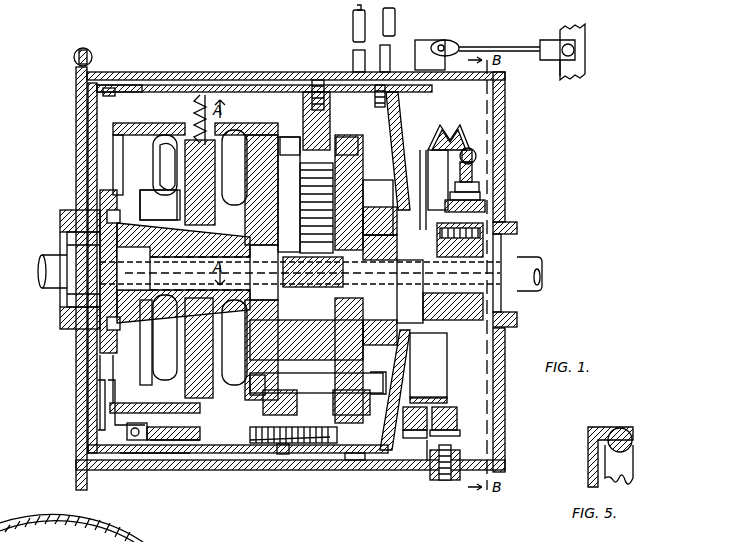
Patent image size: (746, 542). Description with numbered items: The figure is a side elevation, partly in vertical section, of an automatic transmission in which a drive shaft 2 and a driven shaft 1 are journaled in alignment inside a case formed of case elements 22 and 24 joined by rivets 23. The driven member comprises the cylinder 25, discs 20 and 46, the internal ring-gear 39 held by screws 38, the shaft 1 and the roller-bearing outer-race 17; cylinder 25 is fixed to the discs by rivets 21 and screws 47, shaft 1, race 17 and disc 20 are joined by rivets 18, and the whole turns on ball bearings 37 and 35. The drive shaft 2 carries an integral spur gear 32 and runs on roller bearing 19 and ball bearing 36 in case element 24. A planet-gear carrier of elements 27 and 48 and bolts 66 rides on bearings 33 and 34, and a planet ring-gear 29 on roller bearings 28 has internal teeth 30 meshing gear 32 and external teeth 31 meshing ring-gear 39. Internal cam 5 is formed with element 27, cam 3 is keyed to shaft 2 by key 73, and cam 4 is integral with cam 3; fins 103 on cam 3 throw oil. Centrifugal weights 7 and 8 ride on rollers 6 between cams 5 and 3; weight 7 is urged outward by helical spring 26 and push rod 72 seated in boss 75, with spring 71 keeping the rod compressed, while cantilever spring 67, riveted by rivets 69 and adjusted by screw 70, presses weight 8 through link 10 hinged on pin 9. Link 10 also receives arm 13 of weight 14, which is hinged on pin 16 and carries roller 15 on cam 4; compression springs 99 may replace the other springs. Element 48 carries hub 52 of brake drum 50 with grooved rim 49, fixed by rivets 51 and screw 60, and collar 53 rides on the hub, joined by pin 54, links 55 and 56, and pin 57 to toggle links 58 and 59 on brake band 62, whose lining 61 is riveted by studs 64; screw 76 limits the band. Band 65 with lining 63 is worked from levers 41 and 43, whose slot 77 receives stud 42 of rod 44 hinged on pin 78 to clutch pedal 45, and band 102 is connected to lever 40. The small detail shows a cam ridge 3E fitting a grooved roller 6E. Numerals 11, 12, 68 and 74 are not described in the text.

In FIG. 1, the driven shaft 1 is at (45, 285).
In FIG. 1, the drive shaft 2 is at (541, 280).
In FIG. 1, the internal cam 3 is at (178, 138).
In FIG. 1, the third internal elliptical cam 4 is at (130, 124).
In FIG. 1, the internal cam 5 is at (255, 122).
In FIG. 1, the rollers 6 is at (158, 162).
In FIG. 1, the centrifugally operating weight 7 is at (160, 152).
In FIG. 1, the centrifugally operating weight 8 is at (178, 342).
In FIG. 1, the pin 9 is at (205, 398).
In FIG. 1, the connecting link 10 is at (185, 440).
In FIG. 1, the bracket arm 11 is at (160, 446).
In FIG. 1, the bracket base 12 is at (158, 454).
In FIG. 1, the arm 13 is at (127, 440).
In FIG. 1, the third centrifugally operating weight 14 is at (105, 395).
In FIG. 1, the roller 15 is at (115, 410).
In FIG. 1, the pin 16 is at (100, 378).
In FIG. 1, the roller-bearing outer-race 17 is at (97, 296).
In FIG. 1, the rivets 18 is at (100, 330).
In FIG. 1, the roller-bearing assembly 19 is at (96, 268).
In FIG. 1, the disc 20 is at (76, 169).
In FIG. 1, the rivets 21 is at (92, 105).
In FIG. 1, the case element 22 is at (78, 82).
In FIG. 1, the rivets 23 is at (74, 57).
In FIG. 1, the case element 24 is at (110, 85).
In FIG. 1, the cylinder 25 is at (160, 86).
In FIG. 1, the helical spring 26 is at (195, 90).
In FIG. 1, the planet-gear carrier element 27 is at (284, 85).
In FIG. 1, the roller bearing assemblies 28 is at (290, 136).
In FIG. 1, the planet ring-gear 29 is at (348, 190).
In FIG. 1, the internal teeth 30 is at (299, 182).
In FIG. 1, the external teeth 31 is at (362, 340).
In FIG. 1, the spur gear 32 is at (295, 256).
In FIG. 1, the bearing assembly 33 is at (299, 210).
In FIG. 1, the bearing assembly 34 is at (405, 312).
In FIG. 1, the ball bearing assembly 35 is at (397, 272).
In FIG. 1, the ball-bearing assembly 36 is at (518, 298).
In FIG. 1, the ball bearing assembly 37 is at (66, 240).
In FIG. 1, the screws 38 is at (354, 60).
In FIG. 1, the internal ring-gear 39 is at (318, 80).
In FIG. 1, the lever 40 is at (352, 18).
In FIG. 1, the lever 41 is at (396, 22).
In FIG. 1, the stud 42 is at (448, 40).
In FIG. 1, the lever 43 is at (392, 58).
In FIG. 1, the connecting rod 44 is at (520, 46).
In FIG. 1, the motor clutch pedal 45 is at (555, 70).
In FIG. 1, the disc 46 is at (387, 93).
In FIG. 1, the screws 47 is at (400, 96).
In FIG. 1, the planet-gear carrier element 48 is at (380, 190).
In FIG. 1, the grooved rim 49 is at (448, 128).
In FIG. 1, the brake drum 50 is at (445, 148).
In FIG. 1, the rivets 51 is at (420, 200).
In FIG. 1, the hub 52 is at (427, 340).
In FIG. 1, the collar 53 is at (508, 220).
In FIG. 1, the pin 54 is at (484, 205).
In FIG. 1, the connecting link 55 is at (480, 194).
In FIG. 1, the connecting link 56 is at (480, 182).
In FIG. 1, the pin 57 is at (473, 160).
In FIG. 1, the toggle link 58 is at (468, 148).
In FIG. 1, the toggle link 59 is at (478, 140).
In FIG. 1, the screw 60 is at (460, 257).
In FIG. 1, the friction lining 61 is at (458, 420).
In FIG. 1, the brake band 62 is at (460, 427).
In FIG. 1, the friction lining 63 is at (422, 407).
In FIG. 1, the studs 64 is at (410, 430).
In FIG. 1, the band 65 is at (427, 462).
In FIG. 1, the bolts 66 is at (250, 385).
In FIG. 1, the cantilever spring 67 is at (250, 445).
In FIG. 1, the bolt 68 is at (335, 400).
In FIG. 1, the rivets 69 is at (285, 456).
In FIG. 1, the tension-adjusting screw 70 is at (338, 460).
In FIG. 1, the spring 71 is at (185, 215).
In FIG. 1, the push rod 72 is at (185, 250).
In FIG. 1, the key 73 is at (150, 258).
In FIG. 1, the shaft 74 is at (178, 282).
In FIG. 1, the boss 75 is at (262, 268).
In FIG. 1, the screw 76 is at (430, 485).
In FIG. 1, the elongated slot 77 is at (475, 45).
In FIG. 1, the pin 78 is at (552, 35).
In FIG. 1, the compression springs 99 is at (196, 318).
In FIG. 1, the band 102 is at (345, 444).
In FIG. 1, the fins 103 is at (195, 93).
In FIG. 5, the cam ridge 3E is at (633, 433).
In FIG. 5, the grooved roller 6E is at (634, 458).